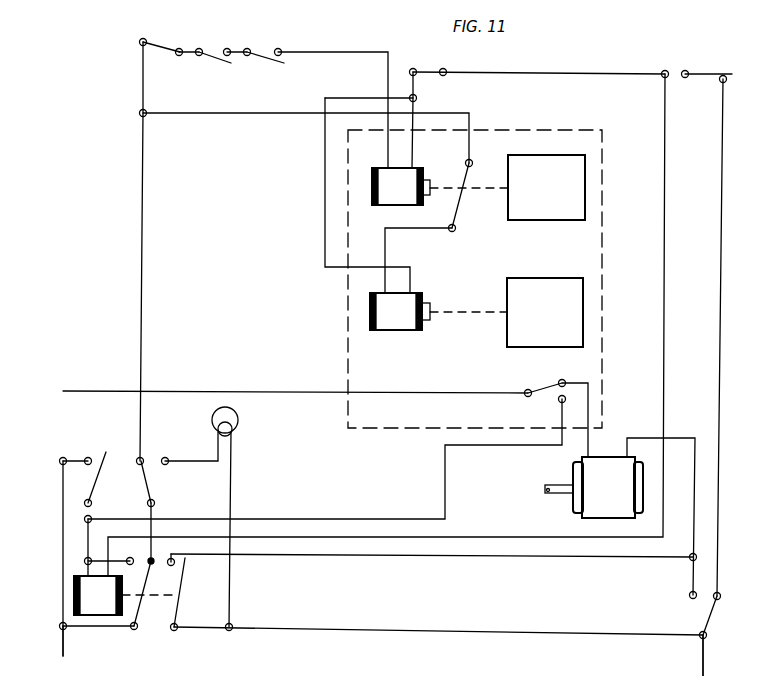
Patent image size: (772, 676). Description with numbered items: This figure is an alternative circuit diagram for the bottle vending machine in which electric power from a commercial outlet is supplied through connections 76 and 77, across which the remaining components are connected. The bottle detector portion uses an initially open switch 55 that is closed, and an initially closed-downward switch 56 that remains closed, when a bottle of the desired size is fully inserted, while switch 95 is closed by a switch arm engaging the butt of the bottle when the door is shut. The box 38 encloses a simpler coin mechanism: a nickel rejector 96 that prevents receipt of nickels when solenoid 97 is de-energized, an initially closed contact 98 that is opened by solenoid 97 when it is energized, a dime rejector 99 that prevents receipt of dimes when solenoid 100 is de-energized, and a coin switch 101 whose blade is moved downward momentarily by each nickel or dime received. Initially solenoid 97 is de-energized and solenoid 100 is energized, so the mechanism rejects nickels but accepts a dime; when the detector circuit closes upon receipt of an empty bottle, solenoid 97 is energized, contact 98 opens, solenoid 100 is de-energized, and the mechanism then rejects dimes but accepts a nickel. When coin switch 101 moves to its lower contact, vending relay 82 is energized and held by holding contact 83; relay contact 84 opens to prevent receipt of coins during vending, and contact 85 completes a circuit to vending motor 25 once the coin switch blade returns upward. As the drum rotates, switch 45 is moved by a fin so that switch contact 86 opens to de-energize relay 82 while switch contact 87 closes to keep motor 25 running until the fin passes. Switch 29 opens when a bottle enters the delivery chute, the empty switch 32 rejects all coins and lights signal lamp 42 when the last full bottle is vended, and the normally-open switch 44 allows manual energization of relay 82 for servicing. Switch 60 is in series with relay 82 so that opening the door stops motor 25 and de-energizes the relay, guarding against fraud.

The switch 56 is at (147, 41).
The switch 55 is at (226, 58).
The switch 95 is at (268, 60).
The switch 29 is at (430, 72).
The switch 60 is at (705, 73).
The box 38 is at (540, 129).
The solenoid 97 is at (390, 182).
The contact 98 is at (470, 163).
The nickel rejector 96 is at (578, 191).
The solenoid 100 is at (385, 310).
The dime rejector 99 is at (578, 314).
The coin switch 101 is at (538, 399).
The vending motor 25 is at (596, 508).
The signal lamp 42 is at (239, 423).
The switch 44 is at (99, 478).
The empty switch 32 is at (148, 479).
The holding contact 83 is at (128, 557).
The relay contact 84 is at (154, 559).
The contact 85 is at (170, 565).
The vending relay 82 is at (97, 607).
The connection 76 is at (60, 643).
The switch contact 87 is at (691, 597).
The switch contact 86 is at (721, 597).
The switch 45 is at (709, 622).
The connection 77 is at (705, 657).